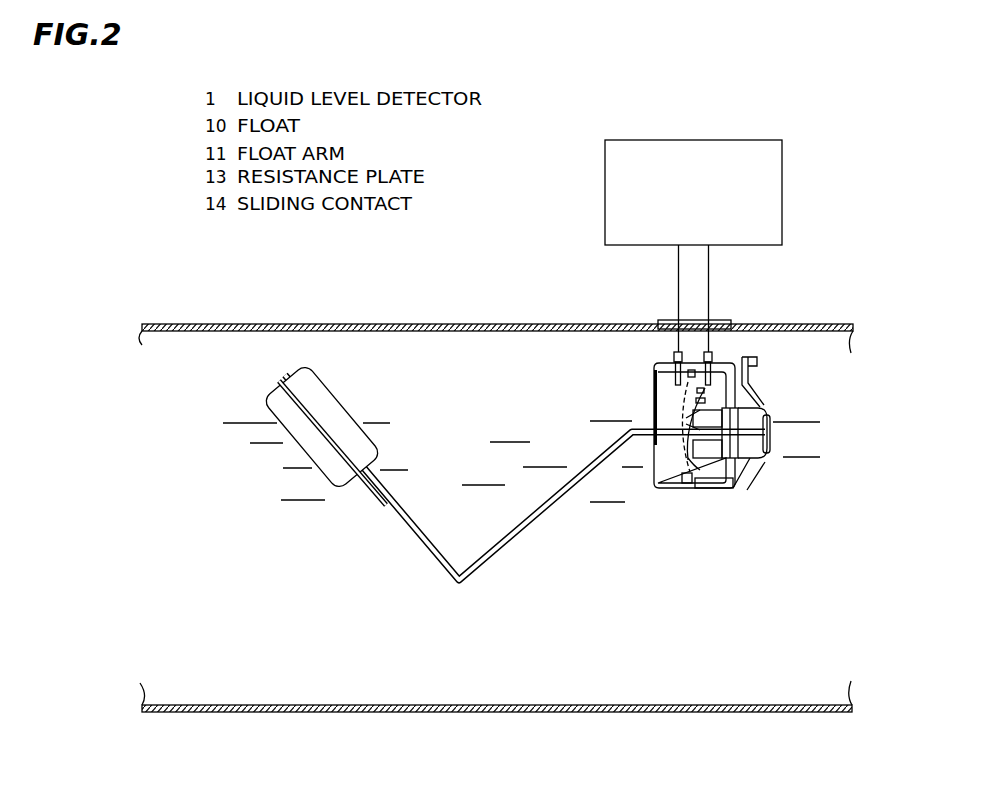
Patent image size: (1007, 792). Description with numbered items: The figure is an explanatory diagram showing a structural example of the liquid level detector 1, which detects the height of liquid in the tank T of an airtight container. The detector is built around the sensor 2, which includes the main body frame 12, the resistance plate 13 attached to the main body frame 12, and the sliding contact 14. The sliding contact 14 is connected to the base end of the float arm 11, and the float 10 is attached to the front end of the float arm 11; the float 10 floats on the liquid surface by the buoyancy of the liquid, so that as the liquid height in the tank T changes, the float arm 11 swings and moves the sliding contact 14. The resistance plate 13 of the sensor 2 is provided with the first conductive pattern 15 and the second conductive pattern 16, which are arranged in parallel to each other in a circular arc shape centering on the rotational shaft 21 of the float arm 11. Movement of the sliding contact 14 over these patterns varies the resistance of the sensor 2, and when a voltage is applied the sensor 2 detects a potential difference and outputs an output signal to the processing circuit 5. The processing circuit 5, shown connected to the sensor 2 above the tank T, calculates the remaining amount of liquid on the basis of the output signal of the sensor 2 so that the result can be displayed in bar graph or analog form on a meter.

The liquid level detector 1 is at (622, 134).
The sensor 2 is at (646, 369).
The processing circuit 5 is at (783, 158).
The float 10 is at (325, 392).
The float arm 11 is at (395, 510).
The main body frame 12 is at (713, 488).
The resistance plate 13 is at (667, 466).
The sliding contact 14 is at (690, 423).
The first conductive pattern 15 is at (688, 462).
The second conductive pattern 16 is at (730, 470).
The rotational shaft 21 is at (750, 470).
The tank T is at (300, 345).